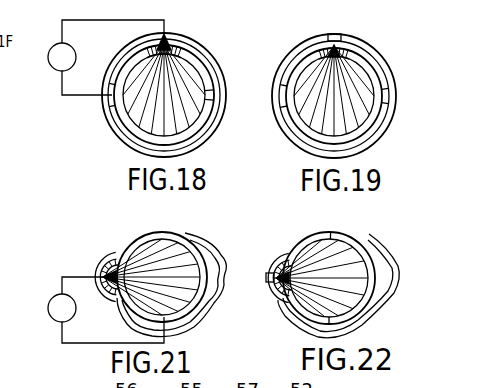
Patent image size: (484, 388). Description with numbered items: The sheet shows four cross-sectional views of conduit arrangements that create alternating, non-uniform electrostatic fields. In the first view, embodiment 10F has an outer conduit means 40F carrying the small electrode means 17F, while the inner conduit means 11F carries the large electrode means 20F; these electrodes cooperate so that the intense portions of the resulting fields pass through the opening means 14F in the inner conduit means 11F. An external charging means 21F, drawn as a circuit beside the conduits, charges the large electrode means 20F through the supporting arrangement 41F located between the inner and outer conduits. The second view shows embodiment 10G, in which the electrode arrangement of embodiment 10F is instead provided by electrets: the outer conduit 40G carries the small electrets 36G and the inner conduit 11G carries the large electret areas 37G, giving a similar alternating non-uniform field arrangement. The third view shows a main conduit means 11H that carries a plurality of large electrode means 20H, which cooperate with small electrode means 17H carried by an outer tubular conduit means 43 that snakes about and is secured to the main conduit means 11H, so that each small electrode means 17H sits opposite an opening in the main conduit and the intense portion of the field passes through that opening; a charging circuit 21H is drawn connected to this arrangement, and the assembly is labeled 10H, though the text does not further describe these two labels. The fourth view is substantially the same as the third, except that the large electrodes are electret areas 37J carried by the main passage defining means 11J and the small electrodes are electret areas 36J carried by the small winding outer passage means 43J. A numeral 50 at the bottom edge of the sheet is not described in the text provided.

In FIG. 18, the embodiment 10F is at (207, 38).
In FIG. 18, the outer conduit means 40F is at (218, 58).
In FIG. 18, the inner conduit means 11F is at (127, 127).
In FIG. 18, the large electrode means 20F is at (192, 132).
In FIG. 18, the small electrode means 17F is at (158, 36).
In FIG. 18, the opening means 14F is at (176, 50).
In FIG. 18, the supporting arrangement 41F is at (112, 100).
In FIG. 18, the external charging means 21F is at (52, 73).
In FIG. 19, the embodiment 10G is at (367, 26).
In FIG. 19, the outer conduit 40G is at (371, 47).
In FIG. 19, the inner conduit 11G is at (376, 72).
In FIG. 19, the large electret areas 37G is at (370, 122).
In FIG. 19, the small electrets 36G is at (337, 34).
In FIG. 21, the main conduit means 11H is at (144, 236).
In FIG. 21, the large electrode means 20H is at (180, 237).
In FIG. 21, the outer tubular conduit means 43 is at (101, 258).
In FIG. 21, the small electrode means 17H is at (98, 266).
In FIG. 21, the lamp assembly shell 10H is at (113, 271).
In FIG. 21, the power source circuit 21H is at (54, 326).
In FIG. 22, the main passage defining means 11J is at (311, 237).
In FIG. 22, the electret areas 37J is at (355, 237).
In FIG. 22, the small winding outer passage means 43J is at (290, 256).
In FIG. 22, the electret areas 36J is at (271, 284).
In FIG. 22, the base 50 is at (363, 387).